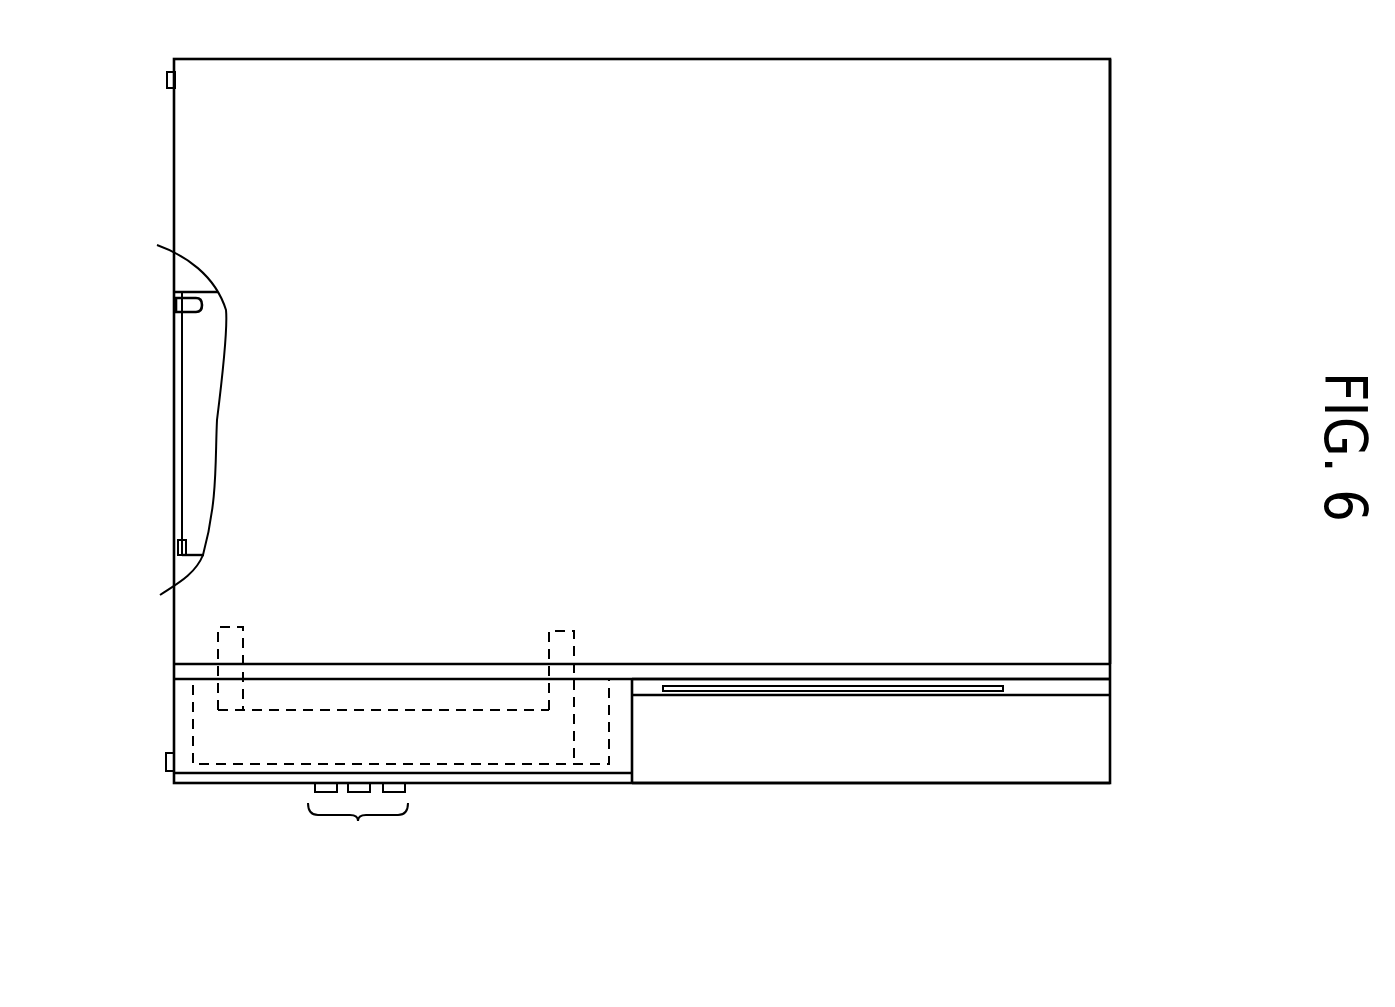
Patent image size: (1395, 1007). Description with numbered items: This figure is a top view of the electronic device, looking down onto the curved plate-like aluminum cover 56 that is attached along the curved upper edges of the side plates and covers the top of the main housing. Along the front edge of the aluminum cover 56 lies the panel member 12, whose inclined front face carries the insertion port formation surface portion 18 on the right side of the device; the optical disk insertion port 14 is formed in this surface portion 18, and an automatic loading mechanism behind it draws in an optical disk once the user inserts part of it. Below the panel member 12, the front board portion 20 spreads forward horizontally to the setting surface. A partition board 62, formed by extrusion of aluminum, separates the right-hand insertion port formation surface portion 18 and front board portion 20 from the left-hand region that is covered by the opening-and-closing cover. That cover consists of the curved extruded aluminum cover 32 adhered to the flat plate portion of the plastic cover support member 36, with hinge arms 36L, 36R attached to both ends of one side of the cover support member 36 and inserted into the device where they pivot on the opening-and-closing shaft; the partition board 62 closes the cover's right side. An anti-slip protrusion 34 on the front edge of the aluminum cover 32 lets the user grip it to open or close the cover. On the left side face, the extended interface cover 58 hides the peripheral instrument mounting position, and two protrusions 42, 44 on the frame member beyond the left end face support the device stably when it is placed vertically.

The panel member 12 is at (1046, 672).
The optical disk insertion port 14 is at (923, 695).
The insertion port formation surface portion 18 is at (1105, 683).
The front board portion 20 is at (1097, 750).
The aluminum cover 32 is at (596, 692).
The anti-slip protrusion 34 is at (358, 825).
The cover support member 36 is at (397, 728).
The hinge arm 36L is at (246, 645).
The hinge arm 36R is at (582, 632).
The protrusion 42 is at (166, 762).
The protrusion 44 is at (167, 82).
The aluminum cover 56 is at (1087, 318).
The extended interface cover 58 is at (174, 432).
The partition board 62 is at (636, 743).